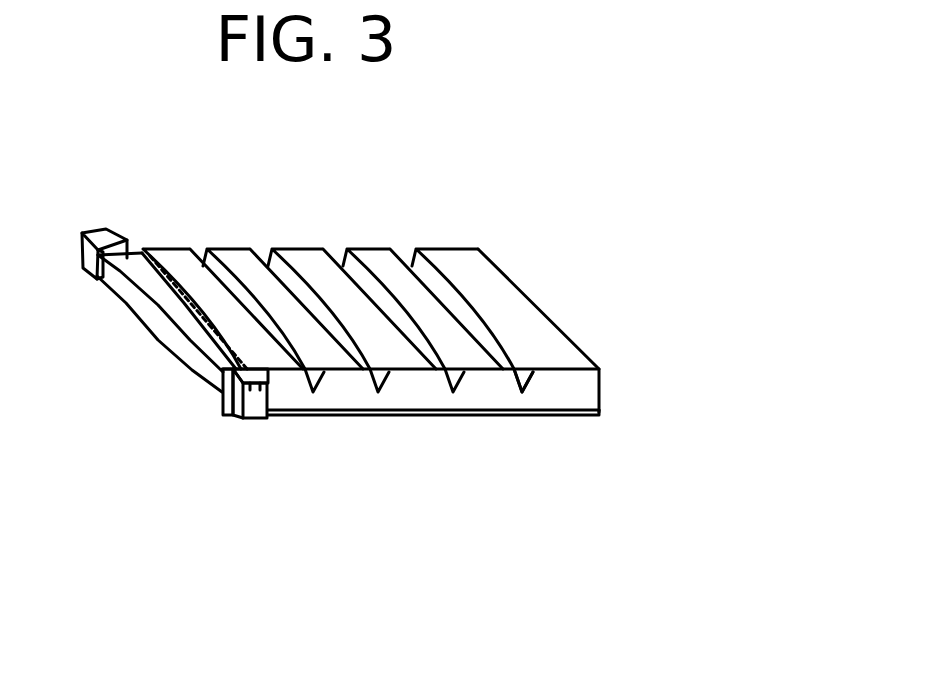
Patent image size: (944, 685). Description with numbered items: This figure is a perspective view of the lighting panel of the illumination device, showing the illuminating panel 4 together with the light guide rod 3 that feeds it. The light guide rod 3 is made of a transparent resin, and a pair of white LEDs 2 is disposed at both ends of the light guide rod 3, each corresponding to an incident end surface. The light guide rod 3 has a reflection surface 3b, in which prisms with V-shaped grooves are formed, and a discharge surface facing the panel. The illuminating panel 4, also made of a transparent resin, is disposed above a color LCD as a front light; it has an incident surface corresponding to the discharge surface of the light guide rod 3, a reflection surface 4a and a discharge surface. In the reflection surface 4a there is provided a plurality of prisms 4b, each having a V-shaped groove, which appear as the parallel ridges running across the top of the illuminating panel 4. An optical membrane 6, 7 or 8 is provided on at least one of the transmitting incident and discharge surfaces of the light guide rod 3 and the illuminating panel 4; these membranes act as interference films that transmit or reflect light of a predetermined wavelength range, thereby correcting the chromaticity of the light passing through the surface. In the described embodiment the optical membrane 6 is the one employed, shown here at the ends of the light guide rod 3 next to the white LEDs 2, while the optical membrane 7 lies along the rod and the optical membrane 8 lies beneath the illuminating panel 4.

The white LED 2 is at (96, 233).
The light guide rod 3 is at (161, 323).
The reflection surface 3b is at (122, 300).
The illuminating panel 4 is at (371, 324).
The reflection surface 4a is at (447, 248).
The prism 4b is at (519, 385).
The optical membrane 6 is at (112, 246).
The optical membrane 7 is at (148, 251).
The optical membrane 8 is at (375, 417).